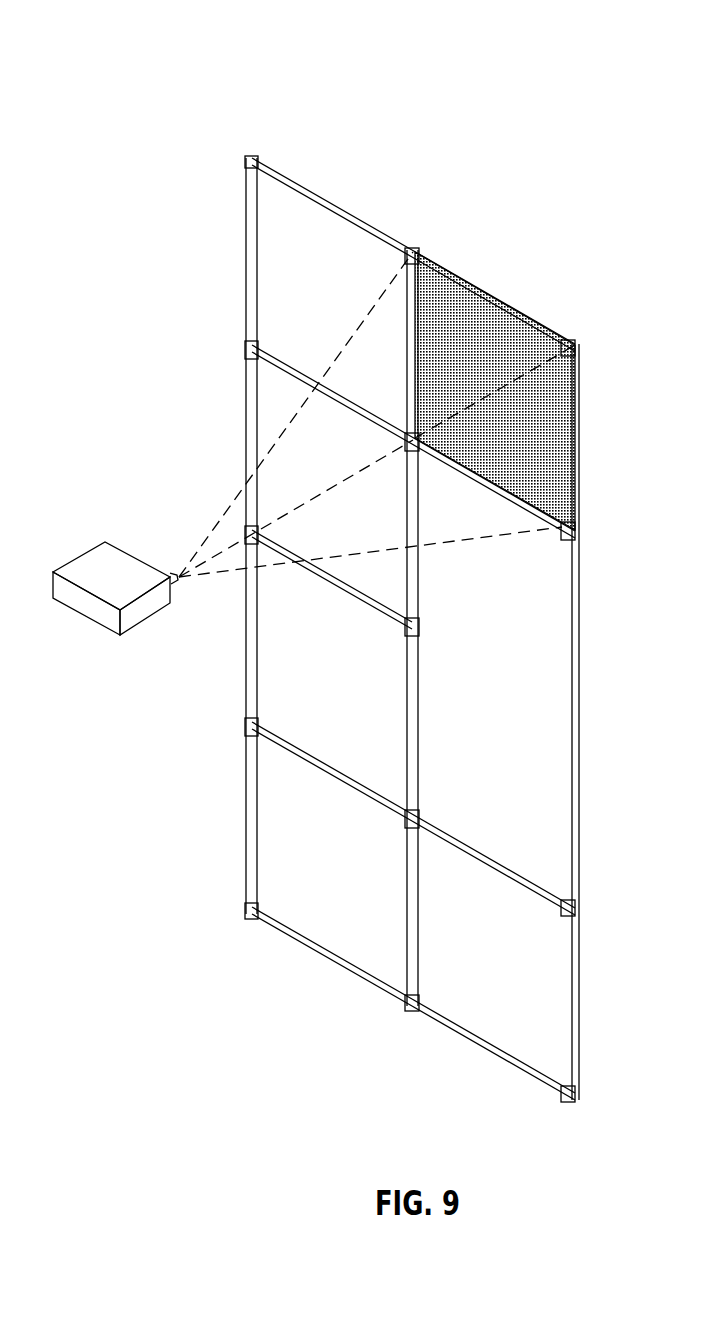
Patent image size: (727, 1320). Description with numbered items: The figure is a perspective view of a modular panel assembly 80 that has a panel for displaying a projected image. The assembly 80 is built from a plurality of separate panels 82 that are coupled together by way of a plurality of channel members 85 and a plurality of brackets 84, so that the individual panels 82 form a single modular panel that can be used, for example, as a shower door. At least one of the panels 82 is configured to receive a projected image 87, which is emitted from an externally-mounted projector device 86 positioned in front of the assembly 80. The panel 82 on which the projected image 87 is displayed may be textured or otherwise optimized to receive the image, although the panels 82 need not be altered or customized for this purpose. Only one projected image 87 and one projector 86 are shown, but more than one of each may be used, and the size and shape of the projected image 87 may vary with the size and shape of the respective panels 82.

The modular panel assembly 80 is at (163, 93).
The panel 82 is at (330, 238).
The bracket 84 is at (246, 352).
The channel member 85 is at (485, 858).
The projector device 86 is at (100, 556).
The projected image 87 is at (550, 462).